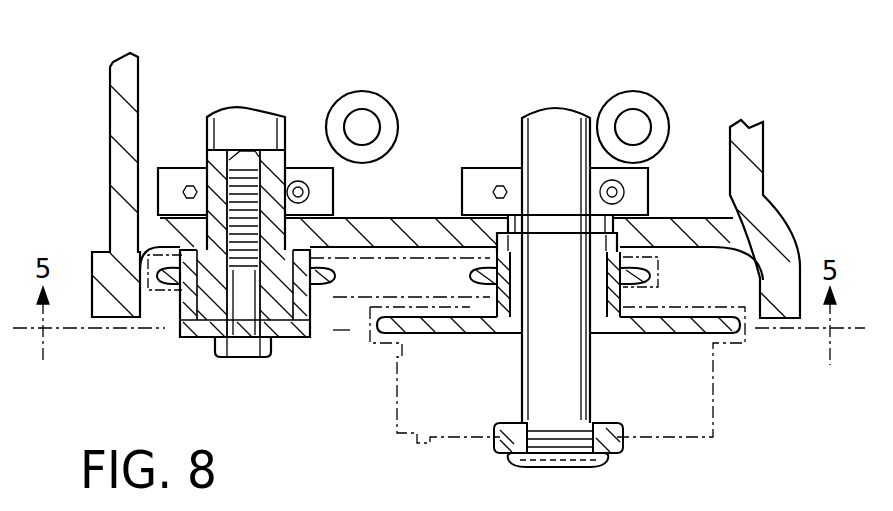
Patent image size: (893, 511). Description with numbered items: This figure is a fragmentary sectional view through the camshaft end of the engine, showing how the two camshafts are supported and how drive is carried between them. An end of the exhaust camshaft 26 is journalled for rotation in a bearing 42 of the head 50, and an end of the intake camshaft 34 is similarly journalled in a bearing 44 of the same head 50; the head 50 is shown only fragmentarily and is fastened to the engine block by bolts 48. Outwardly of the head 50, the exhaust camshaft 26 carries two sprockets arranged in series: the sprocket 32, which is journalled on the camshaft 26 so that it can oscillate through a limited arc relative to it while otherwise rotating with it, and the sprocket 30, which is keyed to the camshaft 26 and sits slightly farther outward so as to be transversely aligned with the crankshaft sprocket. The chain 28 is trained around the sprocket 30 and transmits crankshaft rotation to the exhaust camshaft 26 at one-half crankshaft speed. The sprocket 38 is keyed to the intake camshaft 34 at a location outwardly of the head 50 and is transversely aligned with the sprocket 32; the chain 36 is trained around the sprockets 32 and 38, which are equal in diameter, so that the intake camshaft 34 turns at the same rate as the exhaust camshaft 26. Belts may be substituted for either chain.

The exhaust camshaft 26 is at (555, 122).
The chain 28 is at (714, 347).
The sprocket 30 is at (743, 333).
The sprocket 32 is at (650, 240).
The intake camshaft 34 is at (260, 124).
The chain 36 is at (675, 280).
The sprocket 38 is at (328, 300).
The bearing 42 is at (460, 178).
The bearing 44 is at (333, 185).
The bolts 48 is at (393, 108).
The head 50 is at (772, 221).